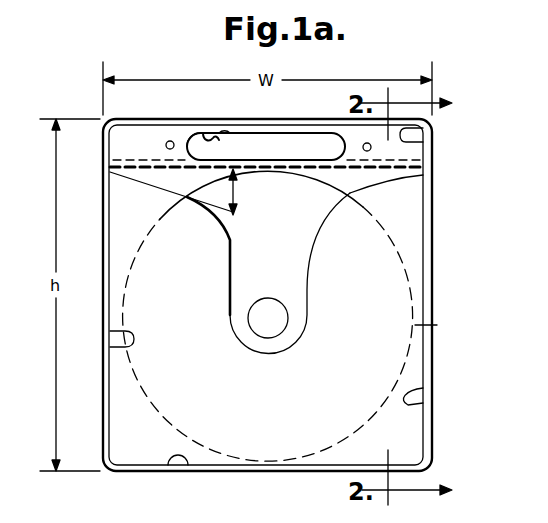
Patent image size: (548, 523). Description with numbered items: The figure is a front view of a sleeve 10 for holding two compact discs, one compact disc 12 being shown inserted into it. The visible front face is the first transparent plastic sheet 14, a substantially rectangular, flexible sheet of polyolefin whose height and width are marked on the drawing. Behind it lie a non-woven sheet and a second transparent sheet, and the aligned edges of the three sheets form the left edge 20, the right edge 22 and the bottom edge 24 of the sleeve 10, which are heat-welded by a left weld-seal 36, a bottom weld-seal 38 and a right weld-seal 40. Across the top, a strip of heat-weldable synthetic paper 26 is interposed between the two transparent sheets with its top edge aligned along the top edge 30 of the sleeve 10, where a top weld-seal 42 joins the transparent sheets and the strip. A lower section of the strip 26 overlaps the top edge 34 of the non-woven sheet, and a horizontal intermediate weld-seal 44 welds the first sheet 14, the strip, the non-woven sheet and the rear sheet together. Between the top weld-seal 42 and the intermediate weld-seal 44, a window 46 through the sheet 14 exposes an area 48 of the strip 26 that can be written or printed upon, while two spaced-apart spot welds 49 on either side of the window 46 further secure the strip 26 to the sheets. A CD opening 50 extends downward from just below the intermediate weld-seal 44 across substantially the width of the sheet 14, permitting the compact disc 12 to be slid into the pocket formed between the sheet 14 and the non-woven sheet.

The sleeve 10 is at (262, 312).
The compact disc 12 is at (440, 325).
The first transparent plastic sheet 14 is at (353, 339).
The left edge 20 is at (104, 232).
The right edge 22 is at (434, 293).
The bottom edge 24 is at (142, 475).
The synthetic paper strip 26 is at (188, 133).
The top edge 30 is at (190, 133).
The top edge of the non-woven sheet 34 is at (457, 198).
The left weld-seal 36 is at (132, 341).
The bottom weld-seal 38 is at (188, 468).
The right weld-seal 40 is at (436, 396).
The top weld-seal 42 is at (424, 141).
The intermediate weld-seal 44 is at (363, 168).
The window 46 is at (222, 134).
The exposed area 48 is at (279, 157).
The spot welds 49 is at (167, 142).
The CD opening 50 is at (165, 212).